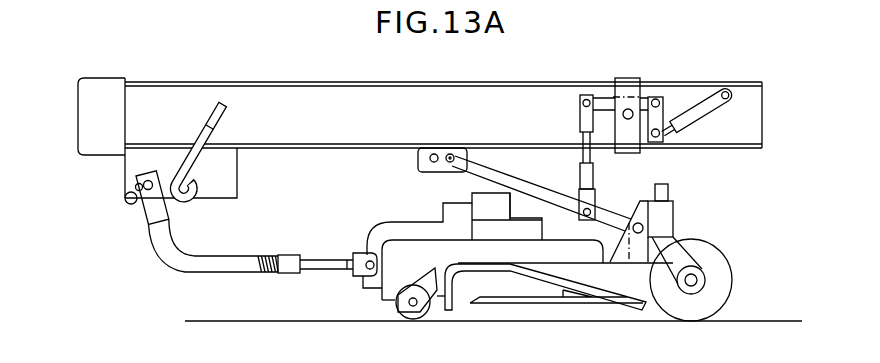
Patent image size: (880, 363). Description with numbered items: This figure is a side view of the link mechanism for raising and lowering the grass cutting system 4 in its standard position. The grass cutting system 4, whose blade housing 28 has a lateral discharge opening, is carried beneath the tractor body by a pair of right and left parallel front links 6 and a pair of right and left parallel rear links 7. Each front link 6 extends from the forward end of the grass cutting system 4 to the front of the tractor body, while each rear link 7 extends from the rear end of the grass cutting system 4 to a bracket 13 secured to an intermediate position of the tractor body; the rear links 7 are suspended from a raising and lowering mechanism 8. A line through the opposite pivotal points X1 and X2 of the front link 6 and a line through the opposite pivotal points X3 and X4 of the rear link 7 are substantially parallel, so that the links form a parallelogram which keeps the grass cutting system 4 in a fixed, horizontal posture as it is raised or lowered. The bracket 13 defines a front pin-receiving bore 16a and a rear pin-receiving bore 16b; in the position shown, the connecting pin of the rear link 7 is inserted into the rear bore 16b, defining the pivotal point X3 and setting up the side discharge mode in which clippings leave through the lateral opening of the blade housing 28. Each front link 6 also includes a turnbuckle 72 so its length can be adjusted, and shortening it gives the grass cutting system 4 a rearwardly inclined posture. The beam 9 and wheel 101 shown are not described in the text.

The boom beam 9 is at (254, 93).
The front link 6 is at (187, 267).
The pivotal point X1 is at (144, 187).
The turnbuckle 72 is at (287, 255).
The pivotal point X2 is at (366, 268).
The blade housing 28 is at (390, 278).
The grass cutting system 4 is at (388, 302).
The bracket 13 is at (418, 164).
The front pin-receiving bore 16a is at (430, 154).
The rear pin-receiving bore 16b is at (452, 153).
The pivotal point X3 is at (446, 163).
The rear link 7 is at (540, 188).
The raising and lowering mechanism 8 is at (699, 116).
The pivotal point X4 is at (643, 228).
The caster wheel 101 is at (724, 290).